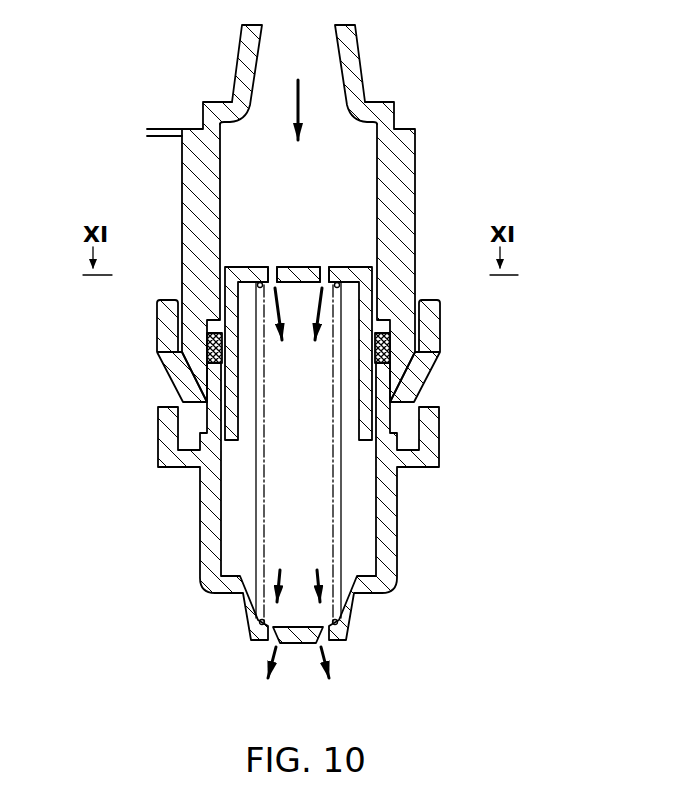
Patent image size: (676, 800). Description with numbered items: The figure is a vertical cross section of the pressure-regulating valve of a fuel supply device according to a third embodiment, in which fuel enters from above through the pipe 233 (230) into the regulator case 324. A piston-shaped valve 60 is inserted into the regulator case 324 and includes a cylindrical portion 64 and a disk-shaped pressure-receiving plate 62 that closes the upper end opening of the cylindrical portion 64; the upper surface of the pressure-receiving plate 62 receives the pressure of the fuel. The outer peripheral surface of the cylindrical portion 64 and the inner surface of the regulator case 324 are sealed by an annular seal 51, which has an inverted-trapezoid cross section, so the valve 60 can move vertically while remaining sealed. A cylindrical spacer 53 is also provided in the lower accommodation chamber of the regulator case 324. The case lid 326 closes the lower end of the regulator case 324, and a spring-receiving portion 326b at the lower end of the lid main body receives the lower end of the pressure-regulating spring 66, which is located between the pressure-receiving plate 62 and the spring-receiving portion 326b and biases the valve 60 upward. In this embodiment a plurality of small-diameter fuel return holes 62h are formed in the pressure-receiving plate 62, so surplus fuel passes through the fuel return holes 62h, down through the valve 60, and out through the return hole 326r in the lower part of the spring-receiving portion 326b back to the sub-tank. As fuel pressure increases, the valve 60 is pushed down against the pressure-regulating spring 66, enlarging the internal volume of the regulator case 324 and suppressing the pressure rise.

The upstream pipe 233 is at (312, 60).
The pipe 230 is at (379, 74).
The pressure-receiving plate 62 is at (308, 267).
The valve 60 is at (348, 267).
The fuel return holes 62h is at (272, 267).
The regulator case 324 is at (432, 200).
The seal 51 is at (438, 333).
The cylindrical portion 64 is at (230, 382).
The spacer 53 is at (382, 417).
The pressure-regulating spring 66 is at (262, 522).
The case lid 326 is at (336, 509).
The spring-receiving portion 326b is at (350, 609).
The return hole 326r is at (254, 632).